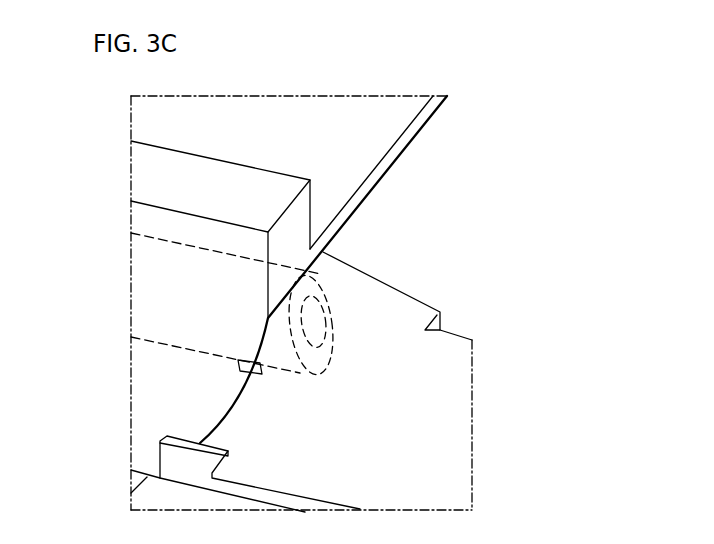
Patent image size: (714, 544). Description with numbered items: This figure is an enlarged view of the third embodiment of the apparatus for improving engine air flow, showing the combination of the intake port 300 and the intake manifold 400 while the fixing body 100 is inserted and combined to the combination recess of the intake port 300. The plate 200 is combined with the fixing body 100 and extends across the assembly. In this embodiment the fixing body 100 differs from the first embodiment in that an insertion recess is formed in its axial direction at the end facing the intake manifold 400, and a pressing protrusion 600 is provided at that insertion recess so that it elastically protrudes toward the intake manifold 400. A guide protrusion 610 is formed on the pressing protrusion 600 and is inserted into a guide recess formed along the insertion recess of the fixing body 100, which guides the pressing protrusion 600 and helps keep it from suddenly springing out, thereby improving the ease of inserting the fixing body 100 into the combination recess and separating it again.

The fixing body 100 is at (152, 303).
The plate 200 is at (377, 143).
The intake port 300 is at (150, 179).
The intake manifold 400 is at (437, 418).
The pressing protrusion 600 is at (314, 318).
The guide protrusion 610 is at (238, 364).